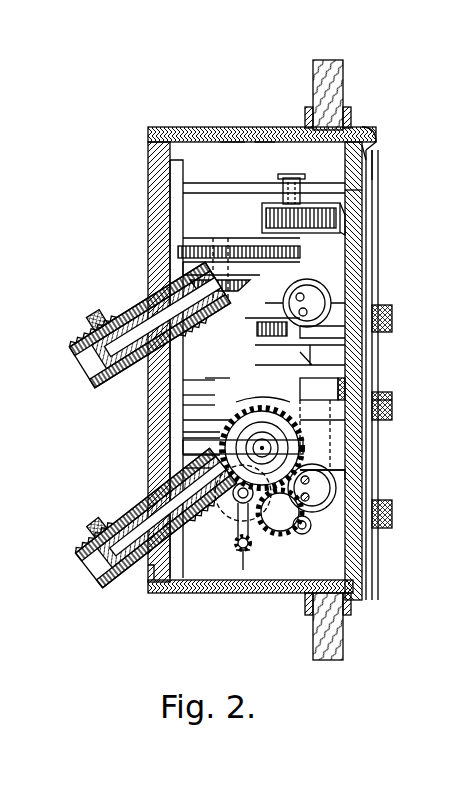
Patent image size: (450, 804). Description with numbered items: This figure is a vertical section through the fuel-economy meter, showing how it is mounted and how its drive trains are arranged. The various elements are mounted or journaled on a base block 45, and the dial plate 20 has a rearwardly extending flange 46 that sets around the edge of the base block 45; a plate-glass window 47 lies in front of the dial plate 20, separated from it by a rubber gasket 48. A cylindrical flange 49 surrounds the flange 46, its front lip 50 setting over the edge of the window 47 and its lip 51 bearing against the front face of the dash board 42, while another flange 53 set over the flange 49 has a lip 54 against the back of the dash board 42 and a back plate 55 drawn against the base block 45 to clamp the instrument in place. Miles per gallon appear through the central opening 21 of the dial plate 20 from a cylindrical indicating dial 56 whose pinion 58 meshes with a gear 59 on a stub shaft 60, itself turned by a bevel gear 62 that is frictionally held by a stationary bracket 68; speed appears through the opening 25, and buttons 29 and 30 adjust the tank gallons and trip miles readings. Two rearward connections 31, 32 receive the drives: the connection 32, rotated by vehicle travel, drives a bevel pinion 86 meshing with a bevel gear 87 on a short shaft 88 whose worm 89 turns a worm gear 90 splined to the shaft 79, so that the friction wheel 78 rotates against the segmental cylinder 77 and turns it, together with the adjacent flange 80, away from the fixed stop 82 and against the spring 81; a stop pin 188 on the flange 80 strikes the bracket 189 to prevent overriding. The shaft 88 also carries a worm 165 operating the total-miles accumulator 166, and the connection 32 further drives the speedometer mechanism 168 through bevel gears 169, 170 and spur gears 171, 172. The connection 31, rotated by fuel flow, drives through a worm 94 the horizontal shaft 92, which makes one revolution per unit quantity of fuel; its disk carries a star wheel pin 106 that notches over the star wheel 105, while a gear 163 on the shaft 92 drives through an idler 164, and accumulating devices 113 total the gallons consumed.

The flange 53 is at (193, 127).
The cylindrical flange 49 is at (232, 127).
The rearwardly extending flange 46 is at (268, 127).
The lip 54 is at (298, 126).
The dash board 42 is at (335, 83).
The lip 51 is at (347, 122).
The gasket 48 is at (366, 152).
The lip 50 is at (372, 158).
The window 47 is at (378, 170).
The speedometer mechanism 168 is at (360, 190).
The opening 25 is at (347, 222).
The base block 45 is at (170, 213).
The spur gear 171 is at (208, 244).
The spur gear 172 is at (265, 244).
The back plate 55 is at (165, 242).
The bevel gear 170 is at (188, 270).
The bevel gear 169 is at (150, 286).
The bevel pinion 86 is at (252, 286).
The worm 165 is at (312, 280).
The accumulator 166 is at (322, 294).
The bevel gear 87 is at (312, 308).
The dial plate 20 is at (345, 268).
The button 30 is at (394, 318).
The gear 59 is at (330, 352).
The pinion 58 is at (330, 366).
The central opening 21 is at (345, 388).
The indicating dial 56 is at (393, 404).
The connection 32 is at (150, 330).
The short shaft 88 is at (190, 370).
The worm 89 is at (190, 380).
The worm gear 90 is at (190, 392).
The friction wheel 78 is at (190, 404).
The stub shaft 60 is at (230, 396).
The shaft 79 is at (185, 420).
The stationary bracket 68 is at (180, 432).
The bevel gear 62 is at (190, 438).
The stop pin 188 is at (215, 440).
The bracket 189 is at (183, 455).
The worm 94 is at (165, 464).
The button 29 is at (380, 412).
The flange 80 is at (300, 420).
The segmental cylinder 77 is at (330, 438).
The spring 81 is at (300, 445).
The fixed stop 82 is at (340, 466).
The accumulating devices 113 is at (338, 488).
The horizontal shaft 92 is at (238, 498).
The connection 31 is at (118, 545).
The idler 164 is at (330, 538).
The gear 163 is at (207, 575).
The star wheel 105 is at (244, 570).
The star wheel pin 106 is at (266, 565).